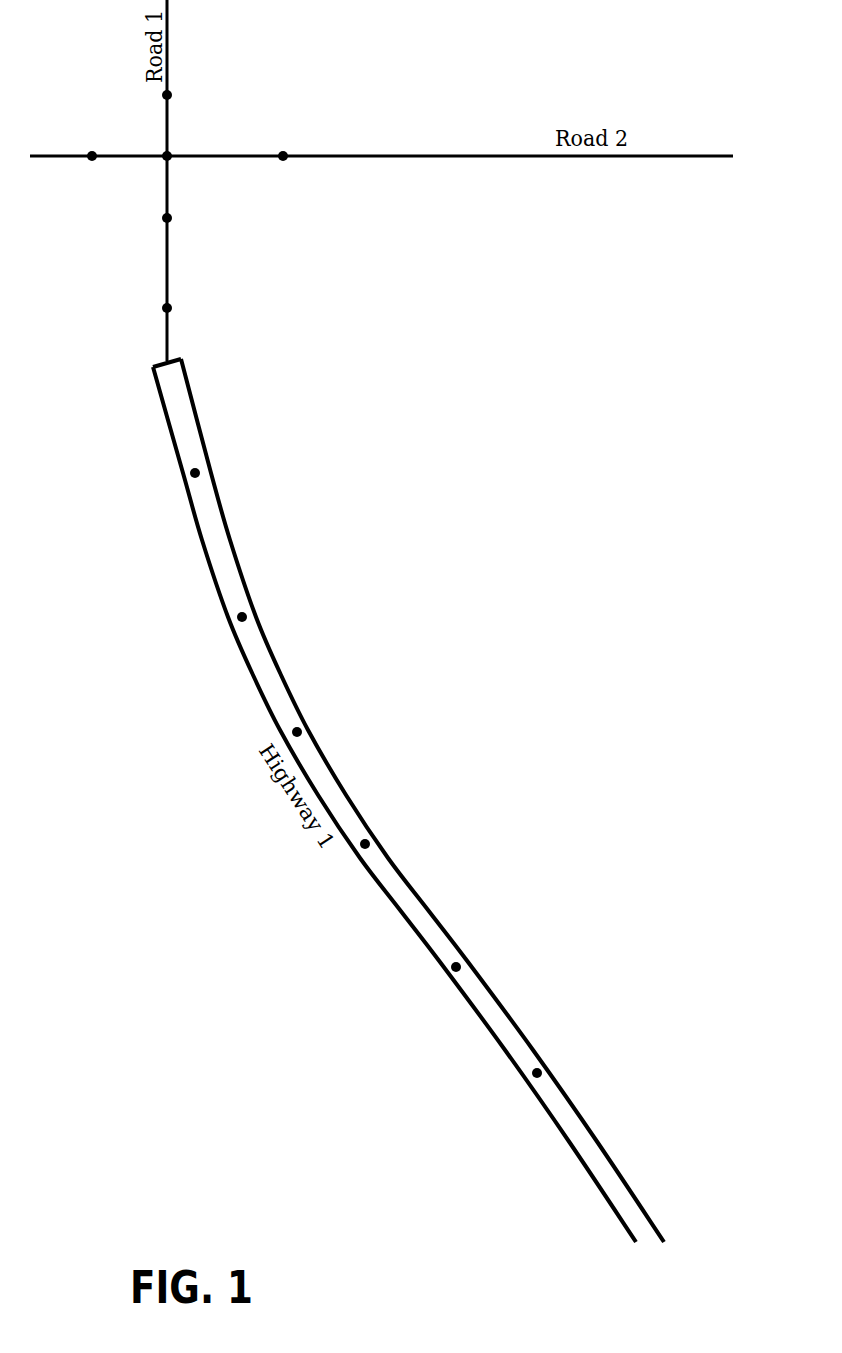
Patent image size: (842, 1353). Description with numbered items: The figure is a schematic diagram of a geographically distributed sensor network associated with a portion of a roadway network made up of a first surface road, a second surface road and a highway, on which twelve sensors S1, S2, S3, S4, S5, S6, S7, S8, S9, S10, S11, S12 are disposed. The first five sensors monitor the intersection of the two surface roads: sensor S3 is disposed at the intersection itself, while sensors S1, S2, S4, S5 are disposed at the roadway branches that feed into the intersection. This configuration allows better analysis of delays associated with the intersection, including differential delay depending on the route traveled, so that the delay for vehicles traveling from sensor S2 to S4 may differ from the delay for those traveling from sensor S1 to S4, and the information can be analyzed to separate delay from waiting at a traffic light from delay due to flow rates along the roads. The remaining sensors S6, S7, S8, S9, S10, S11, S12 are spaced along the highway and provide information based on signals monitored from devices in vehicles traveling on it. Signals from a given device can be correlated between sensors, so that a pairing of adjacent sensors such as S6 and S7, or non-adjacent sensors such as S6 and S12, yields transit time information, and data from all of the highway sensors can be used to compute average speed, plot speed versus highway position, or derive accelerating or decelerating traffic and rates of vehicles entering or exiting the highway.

The sensor S1 is at (170, 93).
The sensor S2 is at (285, 153).
The sensor S3 is at (170, 154).
The sensor S4 is at (170, 216).
The sensor S5 is at (95, 153).
The sensor S6 is at (170, 306).
The sensor S7 is at (199, 471).
The sensor S8 is at (246, 615).
The sensor S9 is at (301, 730).
The sensor S10 is at (362, 847).
The sensor S11 is at (453, 970).
The sensor S12 is at (534, 1076).